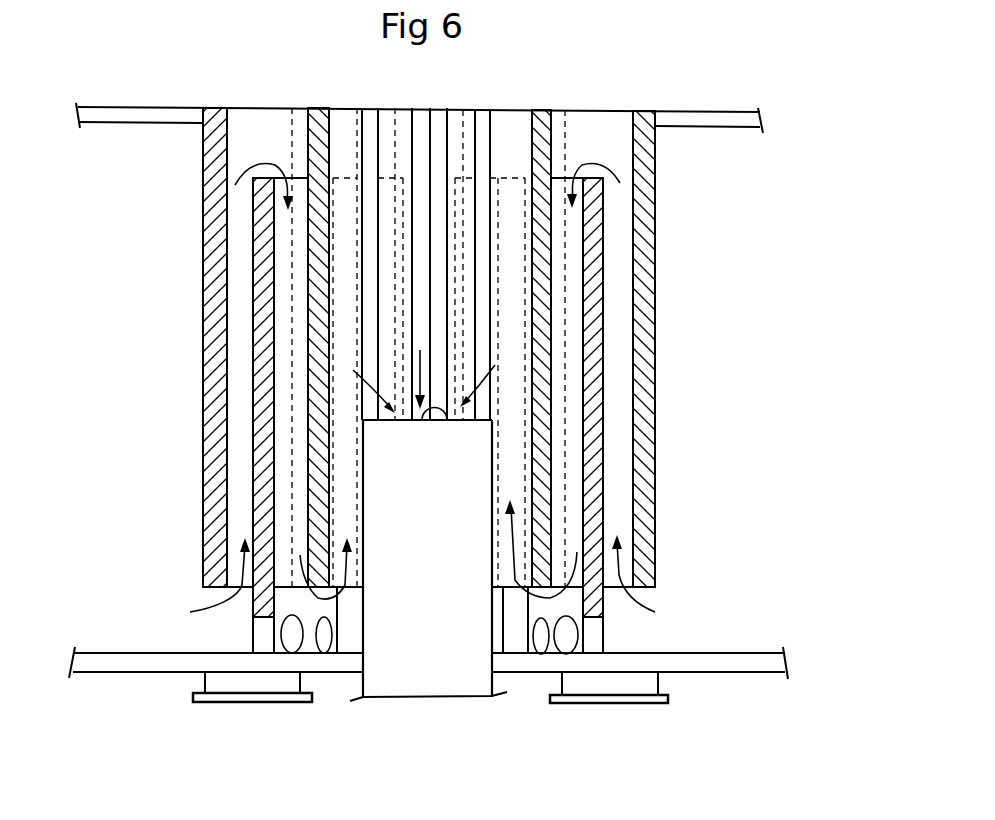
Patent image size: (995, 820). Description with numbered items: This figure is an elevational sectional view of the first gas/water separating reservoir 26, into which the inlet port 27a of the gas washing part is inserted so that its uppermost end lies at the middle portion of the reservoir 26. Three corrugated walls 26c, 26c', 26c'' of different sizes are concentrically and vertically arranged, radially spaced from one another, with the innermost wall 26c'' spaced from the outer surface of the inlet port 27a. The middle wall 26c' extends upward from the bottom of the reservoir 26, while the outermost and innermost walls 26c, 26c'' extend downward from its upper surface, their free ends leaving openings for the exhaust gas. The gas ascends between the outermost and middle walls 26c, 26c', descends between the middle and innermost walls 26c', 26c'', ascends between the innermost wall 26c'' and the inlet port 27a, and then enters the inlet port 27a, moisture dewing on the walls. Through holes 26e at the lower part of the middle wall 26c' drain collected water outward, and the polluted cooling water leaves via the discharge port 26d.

The first gas/water separating reservoir 26 is at (712, 112).
The outermost corrugated wall 26c is at (534, 347).
The middle corrugated wall 26c' is at (469, 360).
The innermost corrugated wall 26c'' is at (467, 324).
The discharge port 26d is at (647, 703).
The through holes 26e is at (325, 655).
The inlet port 27a is at (448, 417).